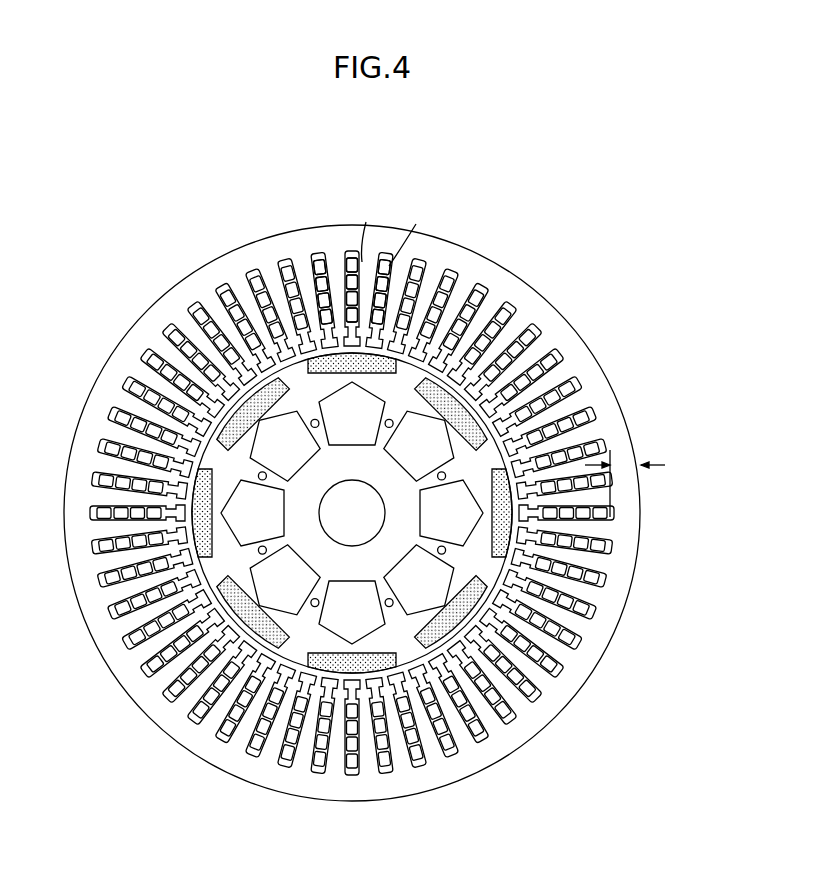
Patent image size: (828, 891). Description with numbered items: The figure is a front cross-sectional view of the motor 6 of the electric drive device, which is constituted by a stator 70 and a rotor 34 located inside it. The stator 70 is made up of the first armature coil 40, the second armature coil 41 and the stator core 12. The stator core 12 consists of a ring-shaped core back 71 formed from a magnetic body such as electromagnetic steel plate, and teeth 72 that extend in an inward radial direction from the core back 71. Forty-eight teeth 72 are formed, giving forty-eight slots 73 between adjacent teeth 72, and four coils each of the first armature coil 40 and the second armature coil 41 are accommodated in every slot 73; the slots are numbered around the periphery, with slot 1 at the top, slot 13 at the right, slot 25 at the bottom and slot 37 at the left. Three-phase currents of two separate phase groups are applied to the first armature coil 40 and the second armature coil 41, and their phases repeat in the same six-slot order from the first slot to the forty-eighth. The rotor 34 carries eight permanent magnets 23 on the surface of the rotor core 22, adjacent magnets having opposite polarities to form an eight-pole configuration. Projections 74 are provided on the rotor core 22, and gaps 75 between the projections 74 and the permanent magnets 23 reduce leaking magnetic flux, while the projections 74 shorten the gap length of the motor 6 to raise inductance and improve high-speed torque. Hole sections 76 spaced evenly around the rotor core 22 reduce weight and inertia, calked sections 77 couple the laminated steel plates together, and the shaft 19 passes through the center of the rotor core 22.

The motor 6 is at (347, 180).
The stator 70 is at (527, 255).
The core back 71 is at (555, 328).
The stator core 12 is at (642, 316).
The teeth 72 is at (570, 407).
The permanent magnets 23 is at (95, 266).
The first armature coil 40 is at (372, 172).
The second armature coil 41 is at (440, 190).
The slots 73 is at (319, 262).
The rotor core 22 is at (420, 670).
The rotor 34 is at (274, 605).
The shaft 19 is at (345, 530).
The hole sections 76 is at (352, 432).
The calked sections 77 is at (267, 481).
The projections 74 is at (242, 635).
The gaps 75 is at (285, 652).
The slot 1 is at (352, 290).
The slot 13 is at (575, 513).
The slot 25 is at (352, 735).
The slot 37 is at (129, 513).